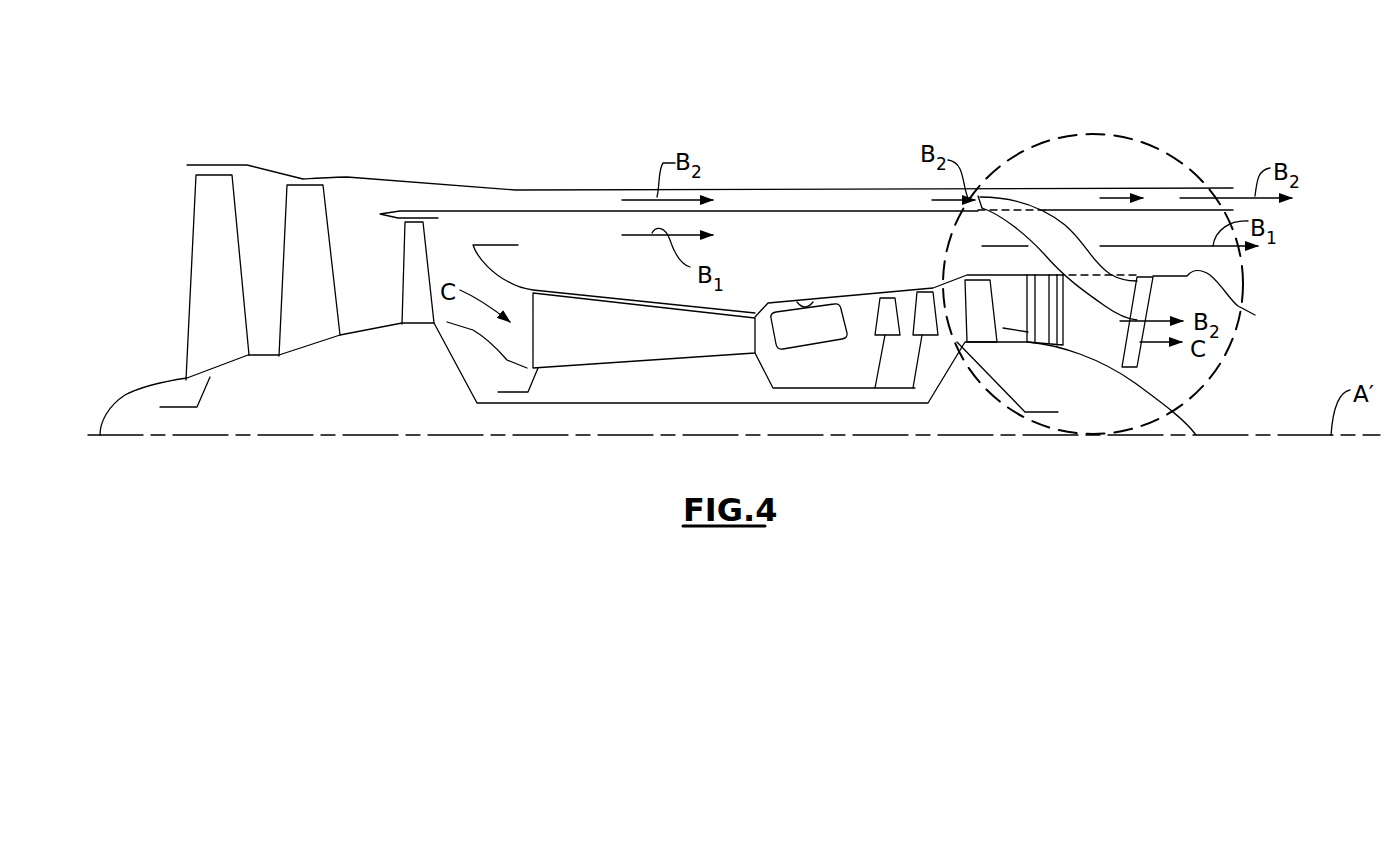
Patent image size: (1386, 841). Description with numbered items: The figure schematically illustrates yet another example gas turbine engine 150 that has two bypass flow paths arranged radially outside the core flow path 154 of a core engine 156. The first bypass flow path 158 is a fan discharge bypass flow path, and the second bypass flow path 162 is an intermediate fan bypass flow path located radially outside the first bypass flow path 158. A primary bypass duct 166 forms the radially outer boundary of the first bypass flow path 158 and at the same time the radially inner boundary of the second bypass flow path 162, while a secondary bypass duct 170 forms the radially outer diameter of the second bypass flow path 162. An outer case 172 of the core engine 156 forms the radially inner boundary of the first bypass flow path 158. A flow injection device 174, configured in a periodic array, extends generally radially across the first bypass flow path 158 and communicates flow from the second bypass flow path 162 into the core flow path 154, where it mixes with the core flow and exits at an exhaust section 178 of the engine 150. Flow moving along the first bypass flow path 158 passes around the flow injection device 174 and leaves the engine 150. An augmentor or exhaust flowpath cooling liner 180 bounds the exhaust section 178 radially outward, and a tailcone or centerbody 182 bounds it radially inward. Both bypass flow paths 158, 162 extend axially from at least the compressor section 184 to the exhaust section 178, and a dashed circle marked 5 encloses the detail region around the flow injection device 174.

The detail region 5 is at (1210, 366).
The engine 150 is at (1127, 108).
The core flow path 154 is at (858, 322).
The core engine 156 is at (732, 312).
The first bypass flow path 158 is at (797, 233).
The second bypass flow path 162 is at (733, 200).
The primary bypass duct 166 is at (868, 213).
The secondary bypass duct 170 is at (513, 189).
The outer case 172 is at (813, 300).
The flow injection device 174 is at (1080, 250).
The exhaust section 178 is at (1253, 295).
The exhaust flowpath cooling liner 180 is at (1211, 319).
The centerbody 182 is at (1192, 420).
The compressor section 184 is at (562, 317).